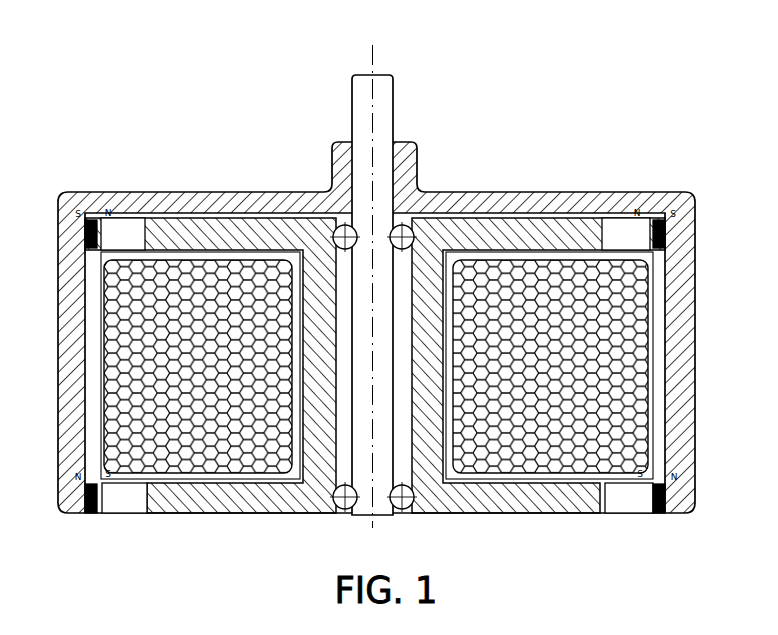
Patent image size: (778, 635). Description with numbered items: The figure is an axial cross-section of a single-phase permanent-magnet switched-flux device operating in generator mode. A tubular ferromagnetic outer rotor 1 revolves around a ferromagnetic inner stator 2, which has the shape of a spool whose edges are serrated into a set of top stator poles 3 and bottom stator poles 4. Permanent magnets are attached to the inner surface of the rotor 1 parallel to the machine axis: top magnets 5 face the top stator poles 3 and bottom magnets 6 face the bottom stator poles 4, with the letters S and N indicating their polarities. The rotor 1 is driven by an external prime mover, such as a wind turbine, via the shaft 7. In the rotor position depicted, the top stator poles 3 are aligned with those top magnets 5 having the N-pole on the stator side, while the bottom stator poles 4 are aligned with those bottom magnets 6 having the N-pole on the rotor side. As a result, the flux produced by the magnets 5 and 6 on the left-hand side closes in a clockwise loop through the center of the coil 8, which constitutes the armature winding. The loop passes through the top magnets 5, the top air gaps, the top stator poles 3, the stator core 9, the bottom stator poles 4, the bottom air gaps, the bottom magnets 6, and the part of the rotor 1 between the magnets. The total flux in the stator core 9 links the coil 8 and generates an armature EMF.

The tubular ferromagnetic outer rotor 1 is at (240, 195).
The ferromagnetic inner stator 2 is at (557, 237).
The top stator poles 3 is at (125, 232).
The bottom stator poles 4 is at (130, 502).
The top permanent magnets 5 is at (87, 230).
The bottom permanent magnets 6 is at (87, 500).
The shaft 7 is at (385, 118).
The coil 8 is at (113, 367).
The stator core 9 is at (427, 367).